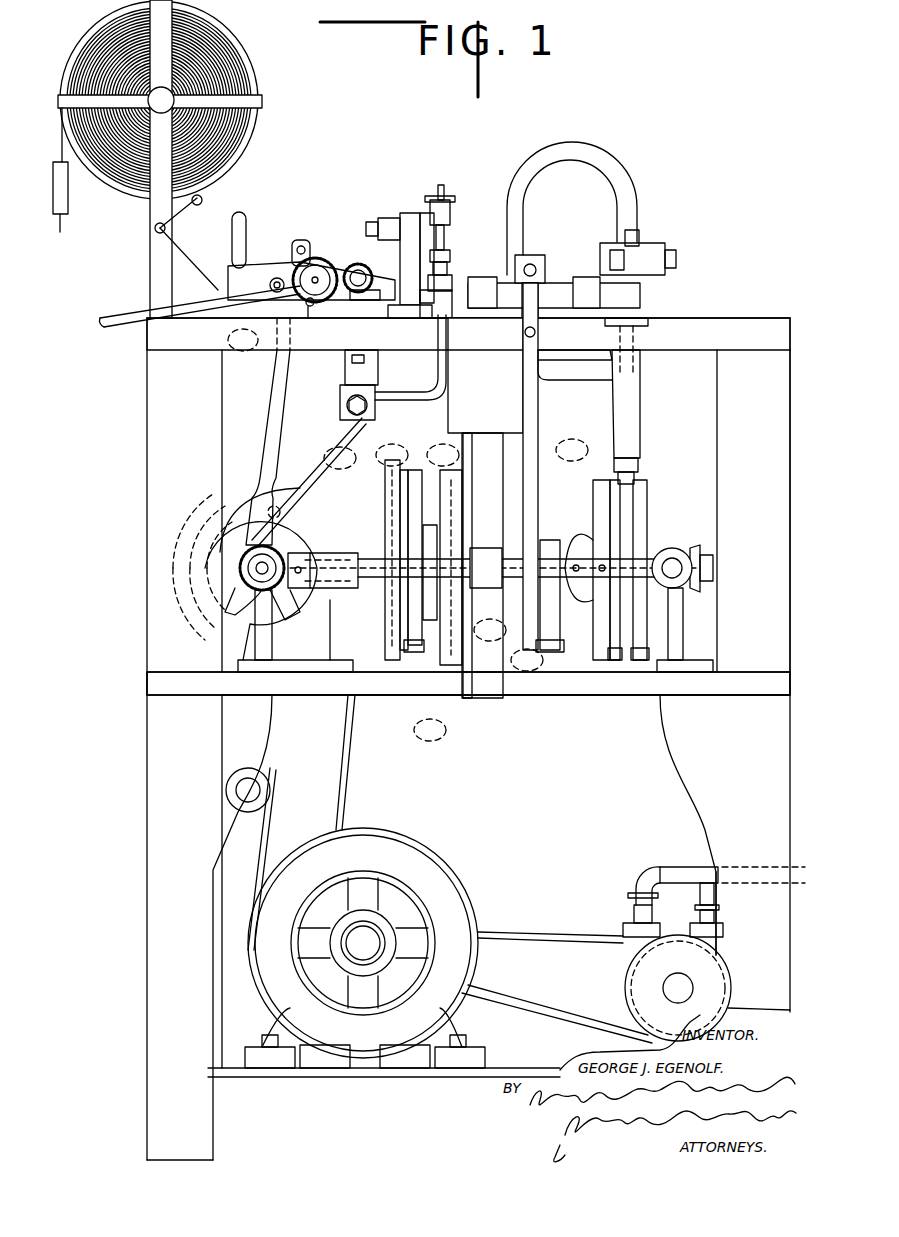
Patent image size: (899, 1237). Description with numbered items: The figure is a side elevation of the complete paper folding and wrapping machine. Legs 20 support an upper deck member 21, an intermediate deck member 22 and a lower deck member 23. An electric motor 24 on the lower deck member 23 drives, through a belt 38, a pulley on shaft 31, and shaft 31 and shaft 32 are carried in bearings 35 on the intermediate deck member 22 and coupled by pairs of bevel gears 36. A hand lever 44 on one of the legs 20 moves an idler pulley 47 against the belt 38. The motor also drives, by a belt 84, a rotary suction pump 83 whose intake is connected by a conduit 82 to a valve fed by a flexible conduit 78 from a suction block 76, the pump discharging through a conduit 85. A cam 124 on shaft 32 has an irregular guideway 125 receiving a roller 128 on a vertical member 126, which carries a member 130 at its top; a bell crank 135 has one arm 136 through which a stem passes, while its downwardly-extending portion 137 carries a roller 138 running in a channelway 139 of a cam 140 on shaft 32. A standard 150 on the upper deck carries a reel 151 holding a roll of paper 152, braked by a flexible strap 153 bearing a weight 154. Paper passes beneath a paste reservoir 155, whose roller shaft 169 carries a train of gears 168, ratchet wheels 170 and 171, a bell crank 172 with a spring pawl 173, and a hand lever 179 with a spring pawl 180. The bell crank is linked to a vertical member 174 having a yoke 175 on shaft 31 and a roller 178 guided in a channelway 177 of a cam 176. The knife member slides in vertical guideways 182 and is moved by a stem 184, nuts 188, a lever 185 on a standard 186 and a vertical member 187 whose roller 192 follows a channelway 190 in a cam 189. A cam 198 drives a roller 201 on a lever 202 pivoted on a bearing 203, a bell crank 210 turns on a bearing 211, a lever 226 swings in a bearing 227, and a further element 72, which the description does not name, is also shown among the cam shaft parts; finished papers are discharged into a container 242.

The legs 20 is at (147, 878).
The upper deck member 21 is at (700, 342).
The intermediate deck member 22 is at (630, 690).
The lower deck member 23 is at (395, 1078).
The electric motor 24 is at (440, 878).
The shaft 31 is at (255, 568).
The shaft 32 is at (578, 556).
The bearings 35 is at (258, 643).
The bevel gears 36 is at (280, 545).
The belt 38 is at (350, 770).
The hand lever 44 is at (242, 214).
The idler pulley 47 is at (242, 812).
The plate 72 is at (422, 628).
The suction block 76 is at (478, 277).
The flexible conduit 78 is at (622, 160).
The conduit 82 is at (690, 802).
The rotary suction pump 83 is at (675, 935).
The belt 84 is at (560, 934).
The conduit 85 is at (684, 868).
The cam 124 is at (560, 548).
The guideway 125 is at (510, 638).
The vertical member 126 is at (540, 438).
The roller 128 is at (545, 505).
The member 130 is at (547, 263).
The bell crank 135 is at (645, 352).
The arm 136 is at (565, 360).
The downwardly-extending portion 137 is at (640, 418).
The roller 138 is at (640, 482).
The channelway 139 is at (605, 665).
The cam 140 is at (648, 515).
The standard 150 is at (150, 258).
The reel 151 is at (245, 100).
The roll of paper 152 is at (232, 58).
The flexible strap 153 is at (250, 132).
The weight 154 is at (64, 177).
The paste reservoir 155 is at (232, 275).
The train of gears 168 is at (362, 266).
The shaft 169 is at (300, 296).
The ratchet wheel 170 is at (325, 262).
The ratchet wheel 171 is at (345, 302).
The bell crank 172 is at (310, 258).
The spring pawl 173 is at (298, 240).
The vertical member 174 is at (272, 390).
The yoke 175 is at (235, 595).
The cam 176 is at (236, 490).
The channelway 177 is at (205, 520).
The roller 178 is at (280, 510).
The hand lever 179 is at (120, 325).
The spring pawl 180 is at (243, 340).
The vertical guideways 182 is at (445, 298).
The stem 184 is at (441, 186).
The lever 185 is at (452, 215).
The standard 186 is at (400, 248).
The vertical member 187 is at (420, 284).
The nuts 188 is at (444, 210).
The cam 189 is at (400, 672).
The channelway 190 is at (418, 672).
The roller 192 is at (395, 490).
The cam 198 is at (468, 515).
The roller 201 is at (448, 478).
The lever 202 is at (465, 478).
The bearing 203 is at (490, 698).
The bell crank 210 is at (320, 445).
The bearing 211 is at (346, 380).
The lever 226 is at (448, 385).
The bearing 227 is at (345, 685).
The container 242 is at (486, 430).